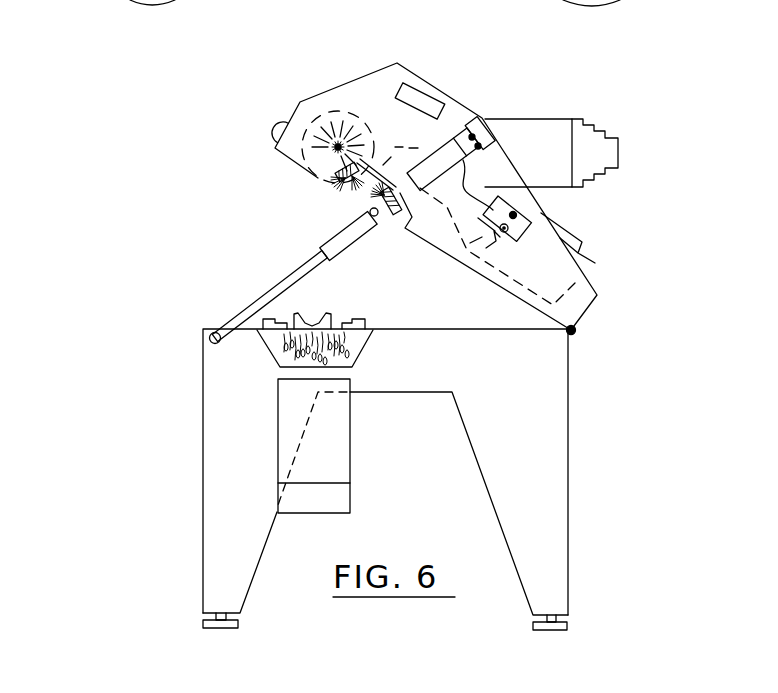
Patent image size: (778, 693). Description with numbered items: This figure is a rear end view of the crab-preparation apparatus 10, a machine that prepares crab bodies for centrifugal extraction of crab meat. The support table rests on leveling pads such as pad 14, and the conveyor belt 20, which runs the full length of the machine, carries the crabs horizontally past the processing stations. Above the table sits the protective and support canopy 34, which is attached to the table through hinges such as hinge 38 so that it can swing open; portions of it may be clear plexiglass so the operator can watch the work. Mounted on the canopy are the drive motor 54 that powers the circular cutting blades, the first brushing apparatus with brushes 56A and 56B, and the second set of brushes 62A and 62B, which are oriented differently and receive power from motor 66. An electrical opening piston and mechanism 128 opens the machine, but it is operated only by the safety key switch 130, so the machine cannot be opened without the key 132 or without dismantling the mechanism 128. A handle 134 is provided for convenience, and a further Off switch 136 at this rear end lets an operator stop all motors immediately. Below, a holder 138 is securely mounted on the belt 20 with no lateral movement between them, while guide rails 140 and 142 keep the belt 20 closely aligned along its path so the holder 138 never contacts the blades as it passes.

The apparatus for preparing crab bodies 10 is at (175, 401).
The leveling pad 14 is at (203, 627).
The conveyor belt 20 is at (350, 345).
The protective and support canopy 34 is at (448, 127).
The hinge 38 is at (575, 333).
The drive motor 54 is at (540, 135).
The brush 56A is at (396, 111).
The brush 56B is at (327, 112).
The brush 62A is at (377, 220).
The brush 62B is at (342, 192).
The motor 66 is at (583, 250).
The electrical opening piston and mechanism 128 is at (293, 267).
The safety key switch 130 is at (525, 232).
The key 132 is at (490, 244).
The handle 134 is at (268, 137).
The Off switch 136 is at (391, 147).
The holder 138 is at (300, 312).
The guide rail 140 is at (365, 318).
The guide rail 142 is at (262, 332).